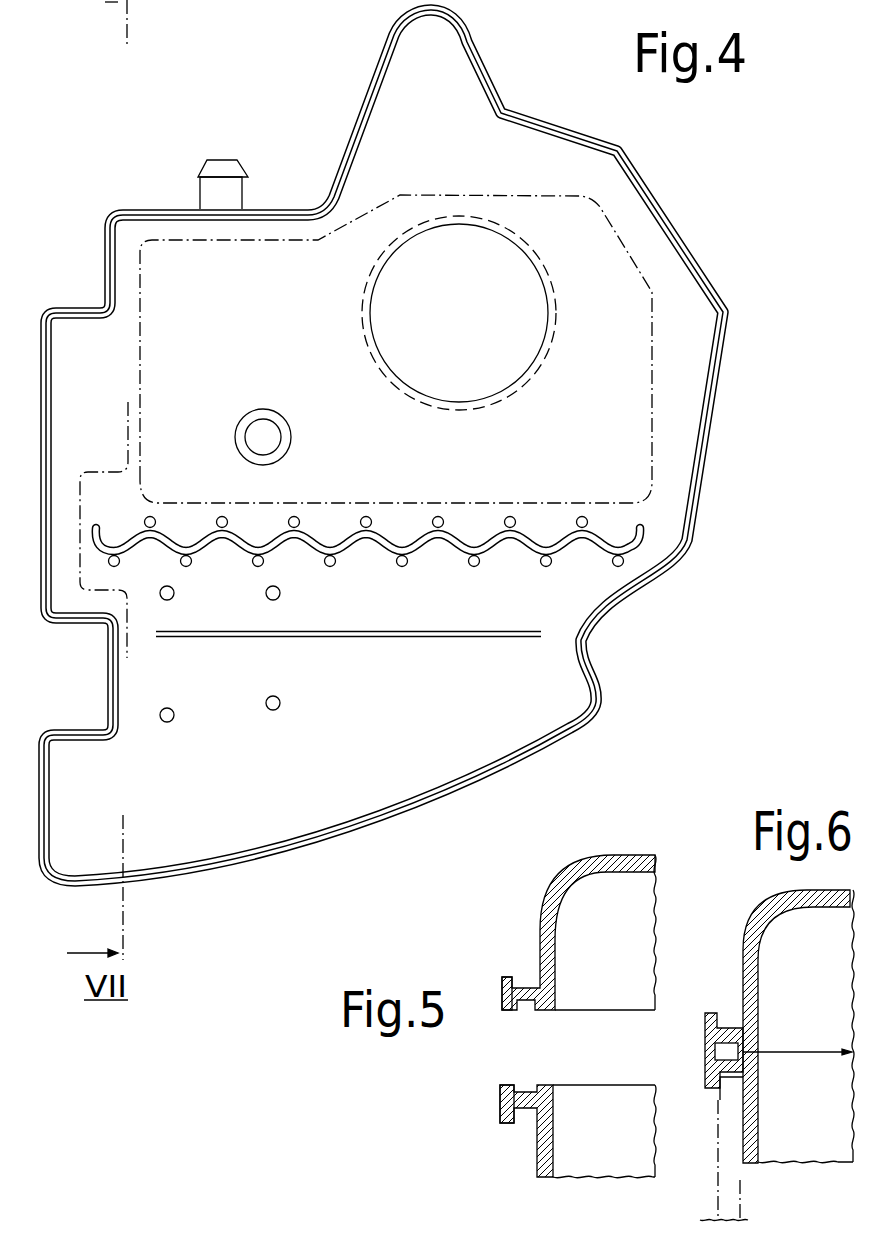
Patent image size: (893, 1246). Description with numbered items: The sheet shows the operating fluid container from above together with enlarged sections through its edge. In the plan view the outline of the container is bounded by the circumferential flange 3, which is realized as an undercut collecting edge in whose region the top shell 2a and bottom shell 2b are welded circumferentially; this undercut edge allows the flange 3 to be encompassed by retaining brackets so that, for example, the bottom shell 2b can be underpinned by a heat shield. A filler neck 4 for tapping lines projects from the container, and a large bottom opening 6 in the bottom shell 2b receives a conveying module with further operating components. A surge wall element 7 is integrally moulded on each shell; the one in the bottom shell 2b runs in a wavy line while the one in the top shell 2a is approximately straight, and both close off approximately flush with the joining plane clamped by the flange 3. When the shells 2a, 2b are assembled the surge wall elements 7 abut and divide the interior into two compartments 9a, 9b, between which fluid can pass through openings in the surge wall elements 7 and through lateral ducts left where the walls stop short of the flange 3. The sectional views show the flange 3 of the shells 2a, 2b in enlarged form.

In FIG. 5, the top shell 2a is at (588, 866).
In FIG. 5, the bottom shell 2b is at (543, 1162).
In FIG. 4, the circumferential flange 3 is at (601, 688).
In FIG. 5, the circumferential flange 3 is at (498, 983).
In FIG. 6, the circumferential flange 3 is at (705, 1079).
In FIG. 4, the filler neck 4 is at (238, 187).
In FIG. 4, the bottom opening 6 is at (469, 331).
In FIG. 4, the surge wall element 7 is at (607, 540).
In FIG. 4, the compartment 9a is at (512, 183).
In FIG. 4, the compartment 9b is at (450, 740).